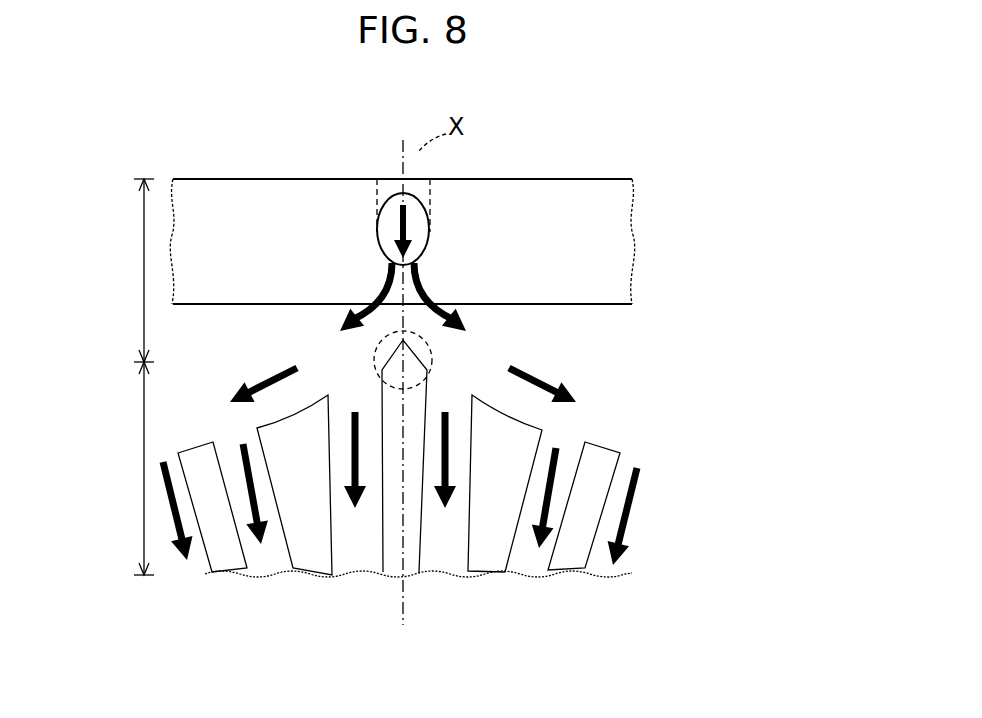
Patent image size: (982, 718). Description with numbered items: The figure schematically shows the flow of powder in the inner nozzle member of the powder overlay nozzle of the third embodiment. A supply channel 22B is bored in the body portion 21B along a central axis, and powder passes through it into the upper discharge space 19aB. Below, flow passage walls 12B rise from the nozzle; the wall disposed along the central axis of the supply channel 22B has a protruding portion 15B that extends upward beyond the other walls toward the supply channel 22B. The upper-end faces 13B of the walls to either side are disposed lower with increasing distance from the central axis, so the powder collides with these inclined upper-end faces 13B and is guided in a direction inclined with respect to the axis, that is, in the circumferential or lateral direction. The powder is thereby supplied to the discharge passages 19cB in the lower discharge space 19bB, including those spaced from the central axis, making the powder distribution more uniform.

The body portion 21B is at (615, 223).
The supply channel 22B is at (430, 215).
The upper discharge space 19aB is at (108, 270).
The lower discharge space 19bB is at (108, 468).
The discharge passage 19cB is at (568, 457).
The protruding portion 15B is at (374, 352).
The upper-end face 13B is at (617, 452).
The flow passage wall 12B is at (593, 561).